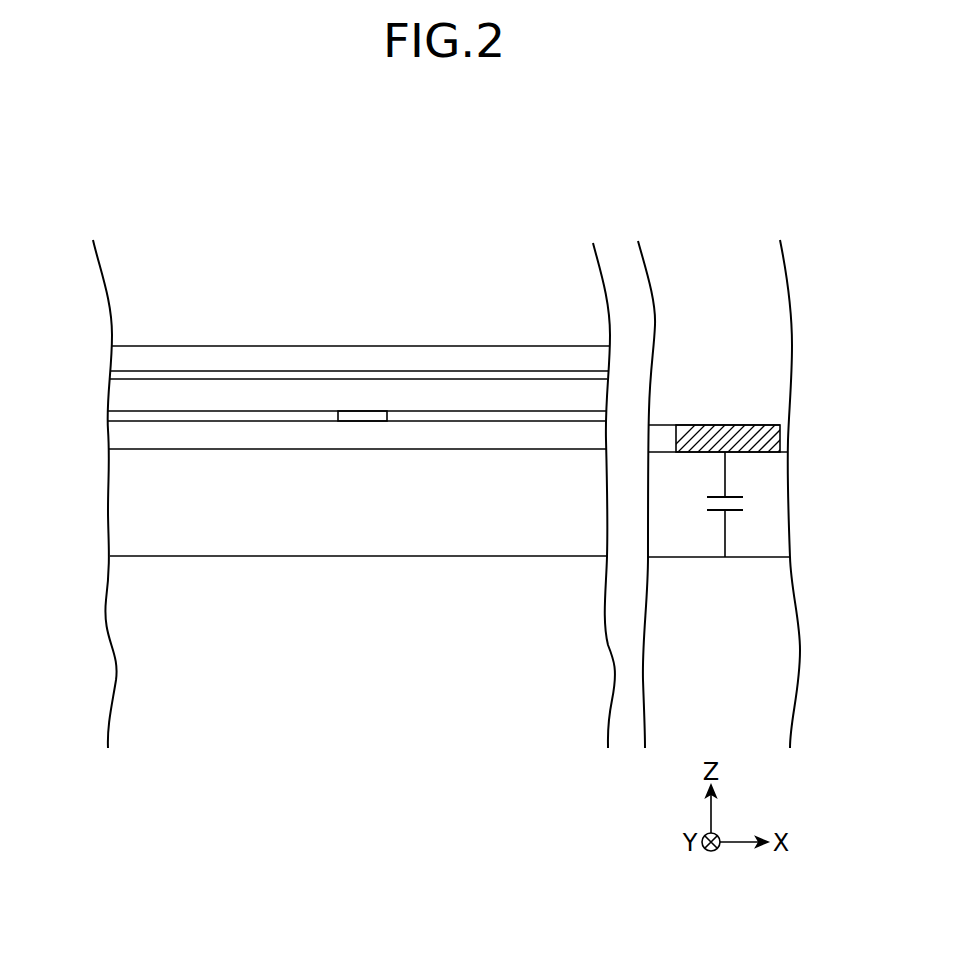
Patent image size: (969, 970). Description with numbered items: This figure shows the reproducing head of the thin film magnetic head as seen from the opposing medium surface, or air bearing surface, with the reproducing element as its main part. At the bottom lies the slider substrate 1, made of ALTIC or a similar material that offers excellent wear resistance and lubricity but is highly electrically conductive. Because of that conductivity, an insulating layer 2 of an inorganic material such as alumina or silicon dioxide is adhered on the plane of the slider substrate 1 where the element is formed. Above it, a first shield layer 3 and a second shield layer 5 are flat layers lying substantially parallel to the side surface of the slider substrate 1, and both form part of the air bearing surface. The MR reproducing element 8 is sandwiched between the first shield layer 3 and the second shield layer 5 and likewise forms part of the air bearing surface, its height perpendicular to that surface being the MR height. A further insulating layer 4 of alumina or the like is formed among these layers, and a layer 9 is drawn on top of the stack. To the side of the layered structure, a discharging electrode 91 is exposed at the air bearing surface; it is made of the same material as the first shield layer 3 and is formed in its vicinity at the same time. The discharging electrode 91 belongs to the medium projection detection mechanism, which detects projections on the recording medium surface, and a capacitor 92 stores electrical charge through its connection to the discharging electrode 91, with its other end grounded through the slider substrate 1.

The slider substrate 1 is at (118, 610).
The insulating layer 2 is at (118, 500).
The first shield layer 3 is at (118, 435).
The insulating layer 4 is at (110, 414).
The second shield layer 5 is at (118, 392).
The reproducing element 8 is at (370, 412).
The protective layer 9 is at (118, 357).
The discharging electrode 91 is at (782, 442).
The capacitor 92 is at (733, 527).